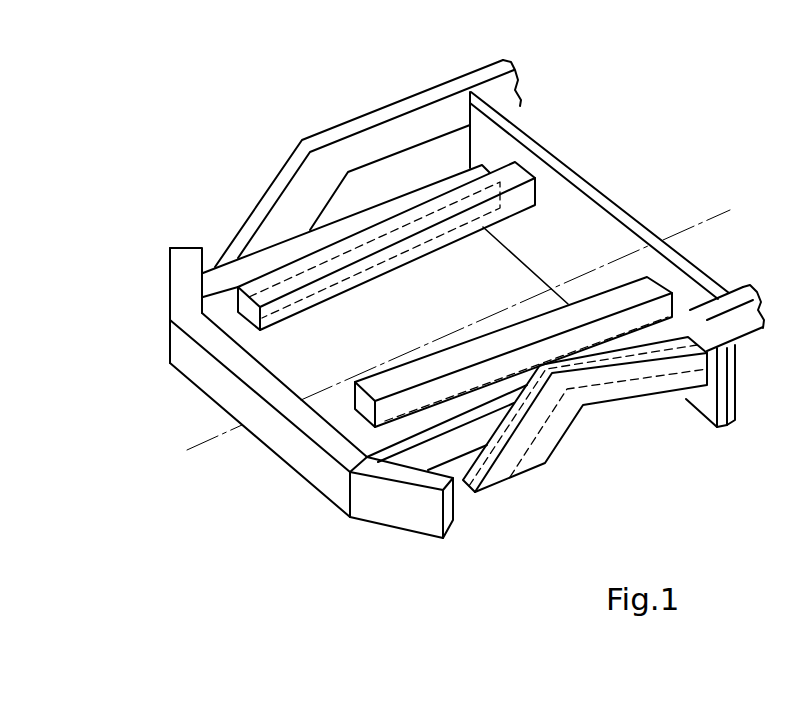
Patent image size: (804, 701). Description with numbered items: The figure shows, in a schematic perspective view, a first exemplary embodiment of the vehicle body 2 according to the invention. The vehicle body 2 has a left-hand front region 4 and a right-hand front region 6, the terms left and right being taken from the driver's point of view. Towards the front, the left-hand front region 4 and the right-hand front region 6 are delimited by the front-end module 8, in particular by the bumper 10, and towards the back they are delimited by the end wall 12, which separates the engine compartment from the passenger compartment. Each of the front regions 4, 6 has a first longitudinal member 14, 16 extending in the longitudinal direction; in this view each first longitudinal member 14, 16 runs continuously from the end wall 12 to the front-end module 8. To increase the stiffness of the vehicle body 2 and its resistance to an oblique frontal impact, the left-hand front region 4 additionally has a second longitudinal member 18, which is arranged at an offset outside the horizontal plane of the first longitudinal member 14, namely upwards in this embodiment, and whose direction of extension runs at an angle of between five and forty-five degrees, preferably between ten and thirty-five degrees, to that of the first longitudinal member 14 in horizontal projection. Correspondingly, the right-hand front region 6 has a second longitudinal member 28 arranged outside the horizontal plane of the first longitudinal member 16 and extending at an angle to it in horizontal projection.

The vehicle body 2 is at (284, 92).
The left-hand front region 4 is at (303, 518).
The right-hand front region 6 is at (160, 403).
The front-end module 8 is at (250, 460).
The bumper 10 is at (378, 507).
The end wall 12 is at (615, 202).
The first longitudinal member 14 is at (622, 405).
The first longitudinal member 16 is at (260, 262).
The second longitudinal member 18 is at (650, 287).
The second longitudinal member 28 is at (517, 172).